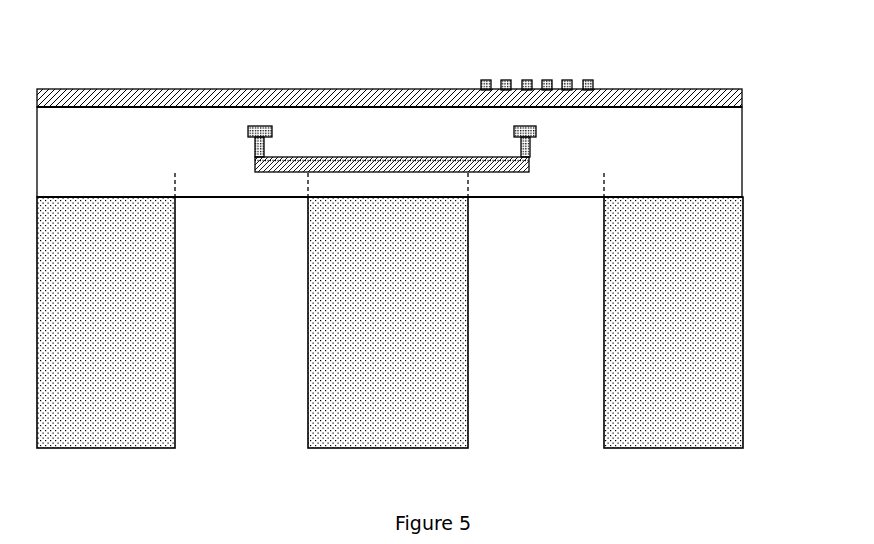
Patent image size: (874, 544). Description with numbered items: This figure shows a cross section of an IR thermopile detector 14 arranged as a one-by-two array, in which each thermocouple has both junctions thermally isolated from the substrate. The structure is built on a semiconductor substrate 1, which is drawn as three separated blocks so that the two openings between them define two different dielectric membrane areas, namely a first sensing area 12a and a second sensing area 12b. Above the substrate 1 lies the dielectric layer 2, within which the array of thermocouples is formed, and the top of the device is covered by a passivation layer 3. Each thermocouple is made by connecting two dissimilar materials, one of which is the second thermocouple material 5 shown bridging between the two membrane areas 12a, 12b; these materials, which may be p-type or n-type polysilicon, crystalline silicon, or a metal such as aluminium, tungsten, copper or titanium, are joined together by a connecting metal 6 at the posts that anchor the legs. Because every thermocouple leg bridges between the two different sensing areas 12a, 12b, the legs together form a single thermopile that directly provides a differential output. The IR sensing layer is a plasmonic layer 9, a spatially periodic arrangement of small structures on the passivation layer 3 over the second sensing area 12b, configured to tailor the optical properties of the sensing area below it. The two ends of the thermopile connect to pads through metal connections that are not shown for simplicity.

The semiconductor substrate 1 is at (147, 352).
The dielectric layer 2 is at (715, 152).
The passivation layer 3 is at (732, 100).
The second thermocouple material 5 is at (345, 163).
The connecting metal 6 is at (267, 118).
The plasmonic layer 9 is at (540, 72).
The first sensing area 12a is at (307, 185).
The second sensing area 12b is at (603, 185).
The IR detector 14 is at (678, 26).